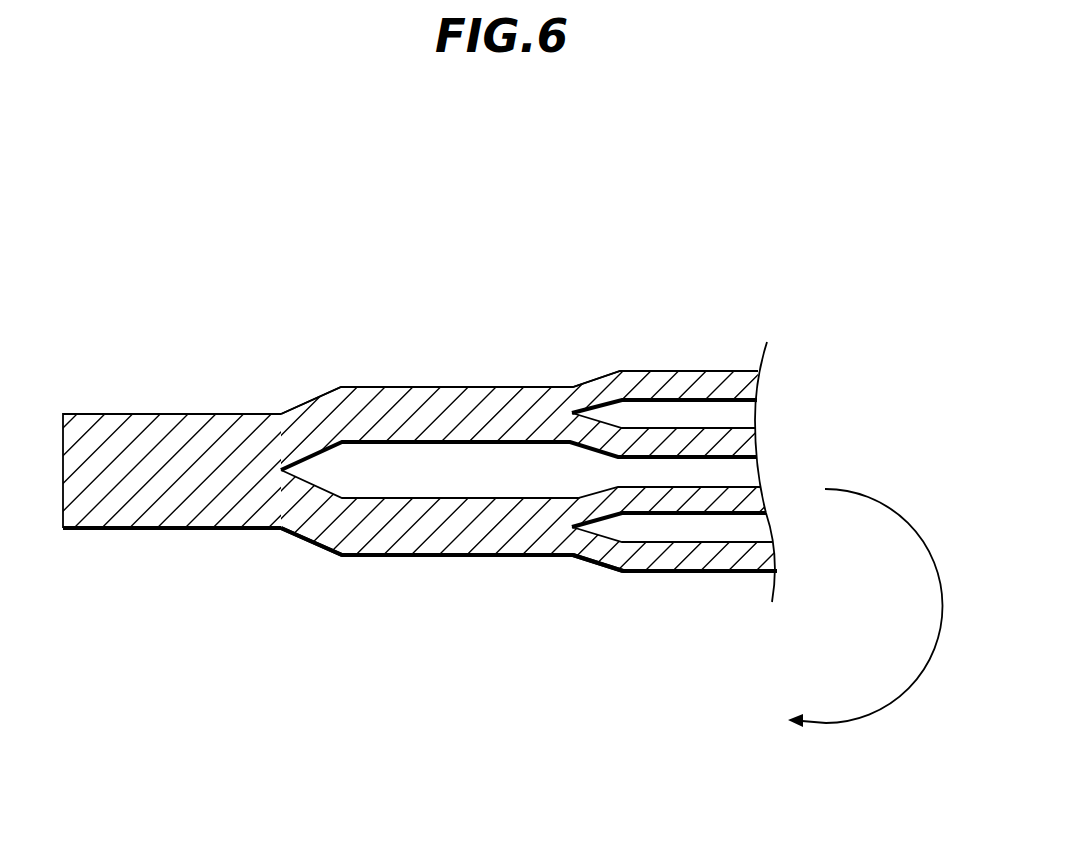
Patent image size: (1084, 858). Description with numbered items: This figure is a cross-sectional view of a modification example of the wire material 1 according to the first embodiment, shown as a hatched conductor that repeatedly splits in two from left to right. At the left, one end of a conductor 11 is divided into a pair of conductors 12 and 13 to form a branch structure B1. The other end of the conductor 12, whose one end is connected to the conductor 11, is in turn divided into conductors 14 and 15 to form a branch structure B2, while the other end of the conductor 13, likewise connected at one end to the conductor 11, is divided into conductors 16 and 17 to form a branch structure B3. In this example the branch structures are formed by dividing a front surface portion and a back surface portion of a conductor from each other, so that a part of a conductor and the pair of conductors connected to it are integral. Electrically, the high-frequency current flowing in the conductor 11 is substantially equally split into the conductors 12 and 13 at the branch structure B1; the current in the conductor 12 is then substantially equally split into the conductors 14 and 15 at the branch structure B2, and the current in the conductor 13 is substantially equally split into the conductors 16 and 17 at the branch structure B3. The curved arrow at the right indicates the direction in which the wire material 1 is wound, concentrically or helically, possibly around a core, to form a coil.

The wire material 1 is at (502, 162).
The conductor 11 is at (182, 518).
The conductor 12 is at (475, 396).
The conductor 13 is at (457, 547).
The conductor 14 is at (742, 392).
The conductor 15 is at (750, 447).
The conductor 16 is at (757, 498).
The conductor 17 is at (772, 553).
The branch structure B1 is at (308, 570).
The branch structure B2 is at (625, 337).
The branch structure B3 is at (622, 594).